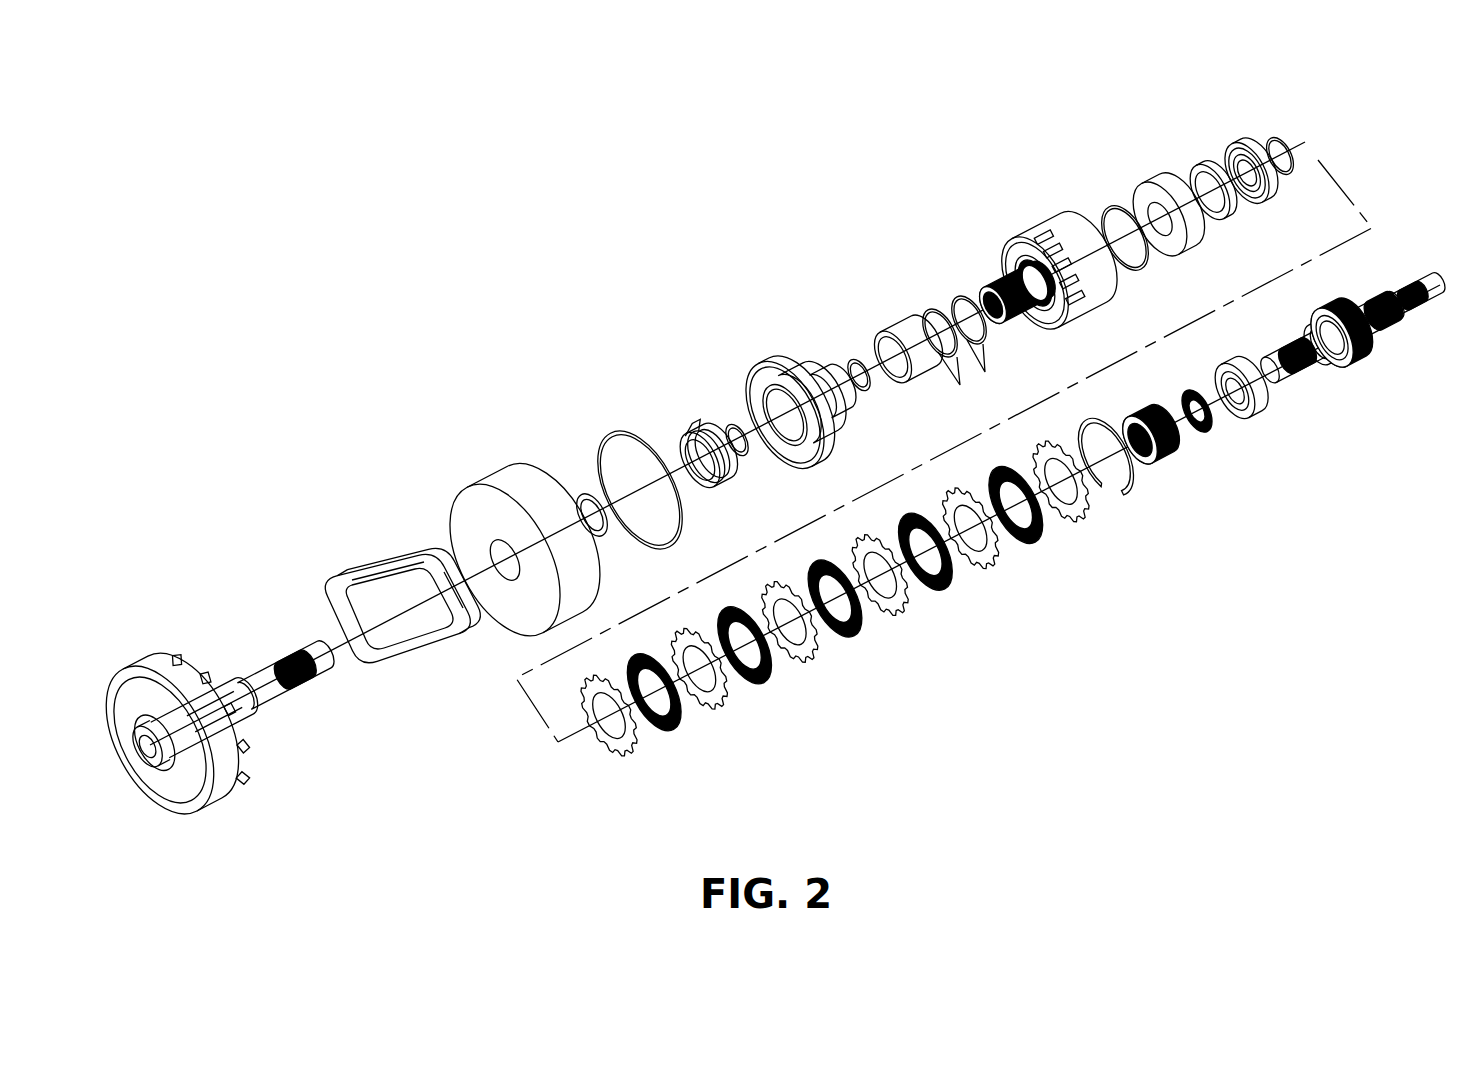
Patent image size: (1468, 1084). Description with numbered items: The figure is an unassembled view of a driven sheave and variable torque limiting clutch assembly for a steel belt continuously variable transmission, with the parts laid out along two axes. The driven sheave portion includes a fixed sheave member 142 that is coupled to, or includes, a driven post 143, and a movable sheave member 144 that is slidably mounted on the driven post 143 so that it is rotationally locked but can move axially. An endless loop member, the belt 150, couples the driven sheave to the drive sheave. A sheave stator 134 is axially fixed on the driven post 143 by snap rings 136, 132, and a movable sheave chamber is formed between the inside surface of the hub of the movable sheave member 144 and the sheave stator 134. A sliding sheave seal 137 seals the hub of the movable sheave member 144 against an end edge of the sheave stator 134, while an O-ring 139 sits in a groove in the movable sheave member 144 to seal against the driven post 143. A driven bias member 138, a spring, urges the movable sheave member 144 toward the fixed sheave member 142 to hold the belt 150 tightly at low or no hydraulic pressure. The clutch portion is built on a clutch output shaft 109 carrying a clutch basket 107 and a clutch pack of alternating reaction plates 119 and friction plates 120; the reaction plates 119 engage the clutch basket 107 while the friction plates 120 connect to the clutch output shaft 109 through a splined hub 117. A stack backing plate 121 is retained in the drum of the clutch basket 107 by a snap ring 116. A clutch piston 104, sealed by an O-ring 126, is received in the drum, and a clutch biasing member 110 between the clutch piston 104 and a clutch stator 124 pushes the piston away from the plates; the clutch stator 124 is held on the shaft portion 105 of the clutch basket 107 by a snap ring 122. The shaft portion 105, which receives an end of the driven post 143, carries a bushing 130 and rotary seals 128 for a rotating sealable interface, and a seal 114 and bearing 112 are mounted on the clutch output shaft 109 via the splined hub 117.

The clutch piston 104 is at (1148, 188).
The shaft portion 105 is at (1022, 315).
The clutch basket 107 is at (1022, 242).
The clutch output shaft 109 is at (1330, 362).
The clutch biasing member 110 is at (1228, 218).
The bearing 112 is at (1252, 412).
The seal 114 is at (1192, 388).
The snap ring 116 is at (1095, 492).
The splined hub 117 is at (1165, 455).
The reaction plates 119 is at (625, 757).
The friction plates 120 is at (674, 732).
The stack backing plate 121 is at (1058, 522).
The snap ring 122 is at (1288, 140).
The clutch stator 124 is at (1268, 196).
The O-ring 126 is at (1150, 258).
The rotary seals 128 is at (955, 353).
The bushing 130 is at (885, 340).
The snap ring 132 is at (873, 388).
The sheave stator 134 is at (790, 370).
The snap ring 136 is at (750, 452).
The sliding sheave seal 137 is at (612, 440).
The driven bias member 138 is at (697, 445).
The O-ring 139 is at (610, 528).
The fixed sheave member 142 is at (157, 665).
The driven post 143 is at (252, 706).
The movable sheave member 144 is at (477, 505).
The belt 150 is at (363, 570).